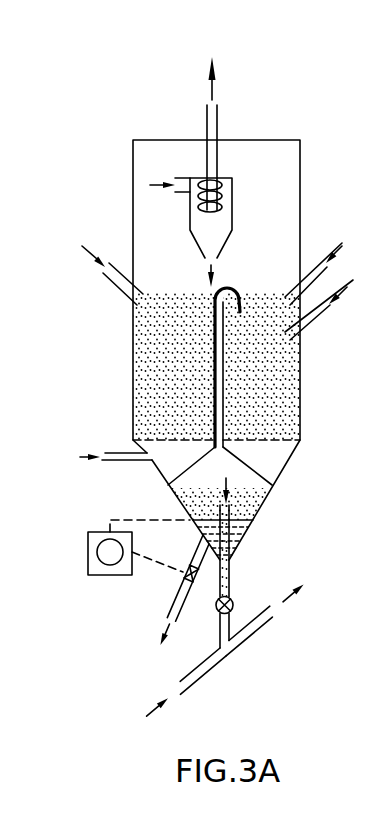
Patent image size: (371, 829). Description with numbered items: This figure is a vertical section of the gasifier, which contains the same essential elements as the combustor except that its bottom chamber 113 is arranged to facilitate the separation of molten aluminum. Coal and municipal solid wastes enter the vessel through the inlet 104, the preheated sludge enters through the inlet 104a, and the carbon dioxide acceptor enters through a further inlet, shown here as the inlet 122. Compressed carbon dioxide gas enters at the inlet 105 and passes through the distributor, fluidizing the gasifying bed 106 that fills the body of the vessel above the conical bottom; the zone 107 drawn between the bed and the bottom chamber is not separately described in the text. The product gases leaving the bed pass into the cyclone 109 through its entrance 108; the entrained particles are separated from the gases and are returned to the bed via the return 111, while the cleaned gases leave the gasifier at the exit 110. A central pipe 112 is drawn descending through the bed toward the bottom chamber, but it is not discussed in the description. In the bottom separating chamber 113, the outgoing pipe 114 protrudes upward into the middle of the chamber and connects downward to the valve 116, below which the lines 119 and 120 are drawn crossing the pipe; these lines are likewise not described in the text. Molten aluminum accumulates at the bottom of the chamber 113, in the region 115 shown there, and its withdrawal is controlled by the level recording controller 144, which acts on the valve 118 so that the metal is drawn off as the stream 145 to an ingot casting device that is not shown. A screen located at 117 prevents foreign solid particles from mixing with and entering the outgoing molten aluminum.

The coal and municipal solid waste inlet 104 is at (116, 292).
The preheated sludge inlet 104a is at (313, 320).
The compressed carbon dioxide gas inlet 105 is at (114, 452).
The gasifying bed 106 is at (190, 369).
The gas distribution zone 107 is at (190, 465).
The cyclone entrance 108 is at (178, 194).
The cyclone 109 is at (234, 220).
The gas exit 110 is at (218, 128).
The particle return 111 is at (262, 271).
The downcomer tube 112 is at (223, 356).
The bottom separating chamber 113 is at (232, 478).
The outgoing pipe 114 is at (215, 514).
The liquid bath 115 is at (250, 563).
The valve 116 is at (233, 603).
The screen 117 is at (193, 522).
The valve 118 is at (178, 588).
The outlet conduit 119 is at (262, 621).
The inlet conduit 120 is at (210, 669).
The carbon dioxide acceptor inlet 122 is at (314, 262).
The level recording controller 144 is at (87, 553).
The molten aluminum stream 145 is at (174, 622).